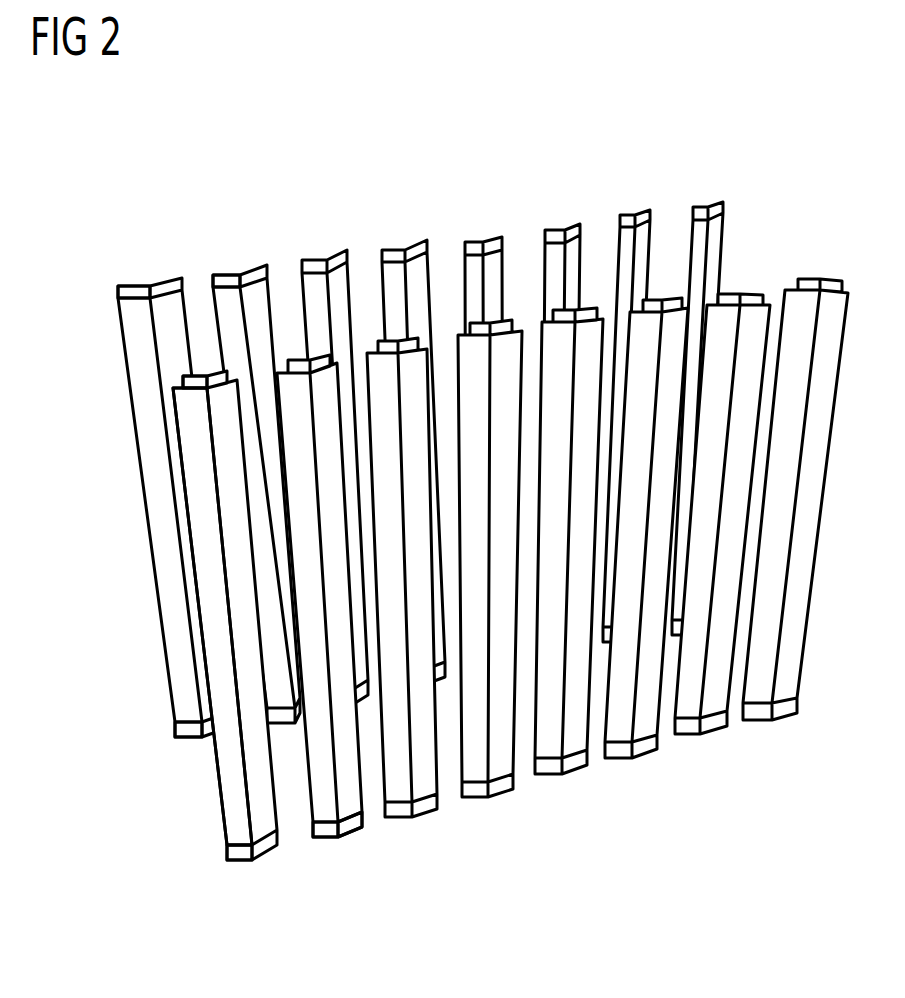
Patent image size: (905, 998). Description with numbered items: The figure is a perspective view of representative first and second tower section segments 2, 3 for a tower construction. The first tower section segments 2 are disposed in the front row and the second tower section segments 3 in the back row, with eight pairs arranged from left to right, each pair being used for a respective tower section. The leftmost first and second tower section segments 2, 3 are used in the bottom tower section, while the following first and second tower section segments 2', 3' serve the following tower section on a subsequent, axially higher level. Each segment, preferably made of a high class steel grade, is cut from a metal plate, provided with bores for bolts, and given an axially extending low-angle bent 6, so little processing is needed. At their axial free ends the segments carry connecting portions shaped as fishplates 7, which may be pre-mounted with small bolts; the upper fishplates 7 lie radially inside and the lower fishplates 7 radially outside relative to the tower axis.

The first tower section segment 2 is at (218, 615).
The following first tower section segment 2' is at (319, 629).
The second tower section segment 3 is at (143, 507).
The following second tower section segment 3' is at (253, 462).
The low-angle bent 6 is at (162, 365).
The fishplate 7 is at (131, 290).